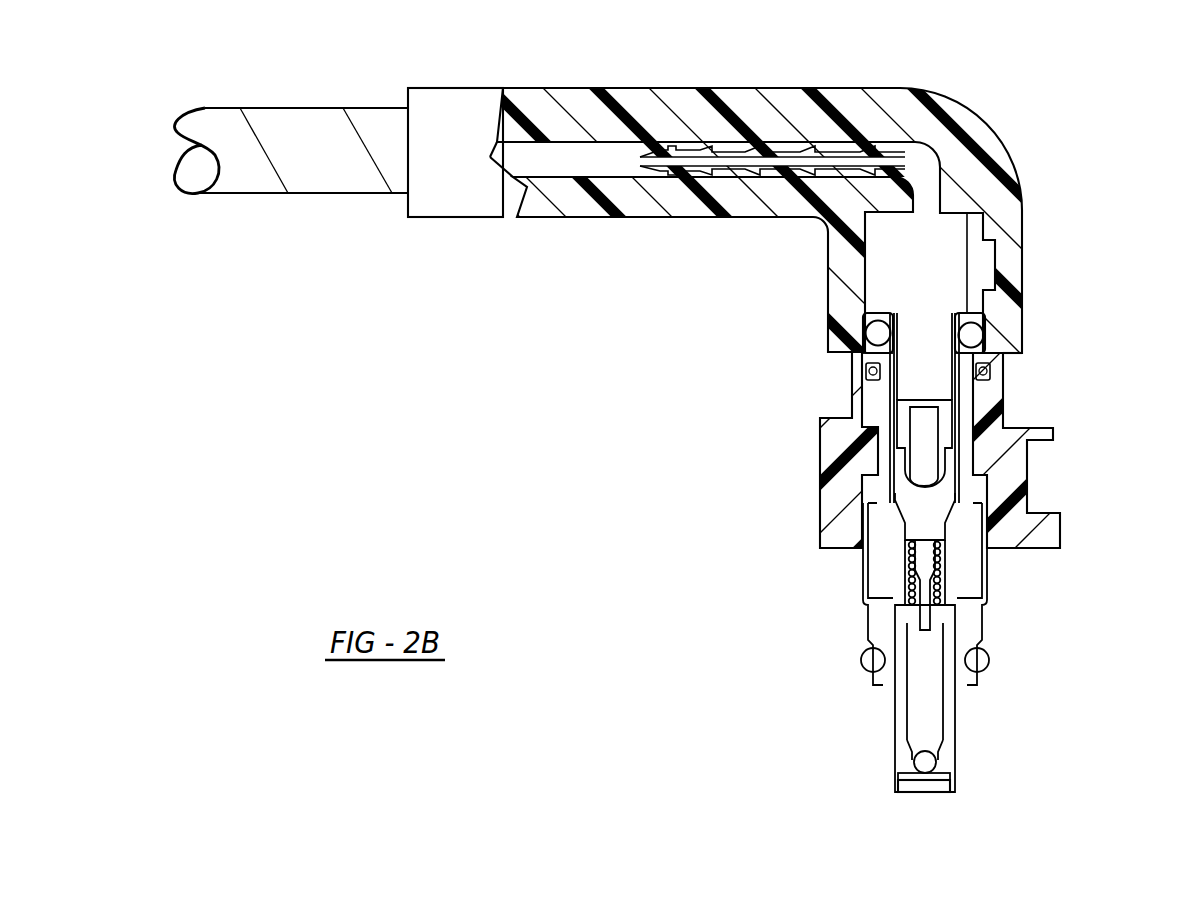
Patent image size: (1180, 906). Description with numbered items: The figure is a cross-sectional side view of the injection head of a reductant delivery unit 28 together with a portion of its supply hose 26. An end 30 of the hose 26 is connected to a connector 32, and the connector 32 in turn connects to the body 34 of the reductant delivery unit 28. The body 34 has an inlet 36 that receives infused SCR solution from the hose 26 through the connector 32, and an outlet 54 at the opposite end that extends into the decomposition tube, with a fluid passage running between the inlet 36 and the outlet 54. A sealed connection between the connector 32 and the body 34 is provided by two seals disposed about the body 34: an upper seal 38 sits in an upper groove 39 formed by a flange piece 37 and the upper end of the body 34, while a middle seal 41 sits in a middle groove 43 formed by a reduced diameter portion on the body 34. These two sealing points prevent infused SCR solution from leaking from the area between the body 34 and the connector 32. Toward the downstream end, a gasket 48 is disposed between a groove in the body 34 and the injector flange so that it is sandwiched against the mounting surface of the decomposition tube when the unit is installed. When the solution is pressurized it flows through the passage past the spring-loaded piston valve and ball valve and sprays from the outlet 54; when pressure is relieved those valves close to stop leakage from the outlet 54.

The hose 26 is at (312, 177).
The reductant delivery unit 28 is at (828, 646).
The end of the hose 30 is at (408, 108).
The connector 32 is at (783, 100).
The body 34 is at (967, 407).
The inlet 36 is at (923, 328).
The flange piece 37 is at (884, 354).
The upper seal 38 is at (972, 336).
The upper groove 39 is at (970, 315).
The middle seal 41 is at (983, 370).
The middle groove 43 is at (877, 373).
The gasket 48 is at (977, 660).
The outlet 54 is at (909, 800).